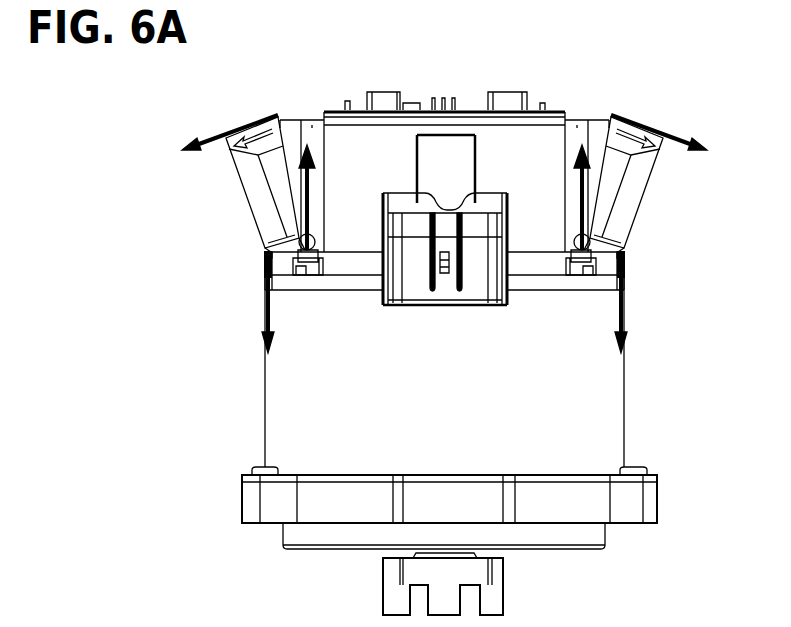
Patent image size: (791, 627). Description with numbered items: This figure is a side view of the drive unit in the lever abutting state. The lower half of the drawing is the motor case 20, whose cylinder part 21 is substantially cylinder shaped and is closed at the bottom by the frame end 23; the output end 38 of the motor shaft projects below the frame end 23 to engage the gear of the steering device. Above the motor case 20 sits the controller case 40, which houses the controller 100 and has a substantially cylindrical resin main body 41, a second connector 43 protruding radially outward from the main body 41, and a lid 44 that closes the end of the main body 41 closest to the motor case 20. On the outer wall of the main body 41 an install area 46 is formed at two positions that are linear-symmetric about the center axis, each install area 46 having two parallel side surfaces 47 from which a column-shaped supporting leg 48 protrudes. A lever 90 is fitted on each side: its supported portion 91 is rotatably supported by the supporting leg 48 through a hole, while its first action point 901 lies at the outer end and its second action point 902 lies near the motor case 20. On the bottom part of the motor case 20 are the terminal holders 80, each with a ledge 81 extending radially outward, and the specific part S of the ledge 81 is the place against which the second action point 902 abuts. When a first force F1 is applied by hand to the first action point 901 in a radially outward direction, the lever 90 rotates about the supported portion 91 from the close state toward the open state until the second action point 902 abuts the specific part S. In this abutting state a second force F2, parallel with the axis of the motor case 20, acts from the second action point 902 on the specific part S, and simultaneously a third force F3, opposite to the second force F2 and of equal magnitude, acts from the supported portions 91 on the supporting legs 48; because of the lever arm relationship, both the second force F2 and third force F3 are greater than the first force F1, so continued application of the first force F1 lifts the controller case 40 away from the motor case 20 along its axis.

The controller 100 is at (464, 105).
The controller case 40 is at (382, 130).
The main body 41 is at (408, 130).
The second connector 43 is at (447, 308).
The lid 44 is at (512, 268).
The install area 46 is at (293, 128).
The side surface 47 is at (316, 128).
The supporting leg 48 is at (318, 244).
The lever 90 is at (240, 184).
The first action point 901 is at (238, 136).
The second action point 902 is at (264, 256).
The supported portion 91 is at (309, 262).
The terminal holder 80 is at (264, 277).
The ledge 81 is at (264, 266).
The specific part S is at (270, 245).
The first force F1 is at (203, 138).
The second force F2 is at (263, 312).
The third force F3 is at (312, 193).
The cylinder part 21 is at (266, 430).
The motor case 20 is at (264, 456).
The frame end 23 is at (246, 504).
The output end 38 is at (389, 577).